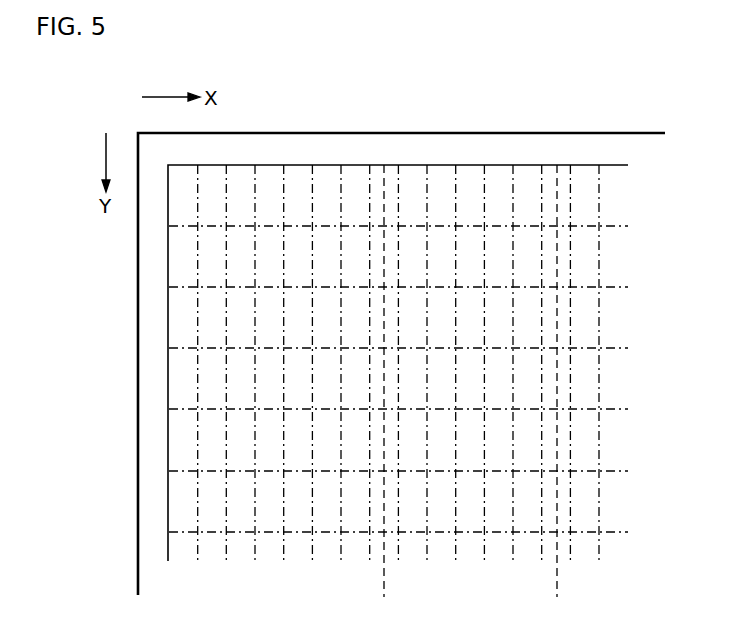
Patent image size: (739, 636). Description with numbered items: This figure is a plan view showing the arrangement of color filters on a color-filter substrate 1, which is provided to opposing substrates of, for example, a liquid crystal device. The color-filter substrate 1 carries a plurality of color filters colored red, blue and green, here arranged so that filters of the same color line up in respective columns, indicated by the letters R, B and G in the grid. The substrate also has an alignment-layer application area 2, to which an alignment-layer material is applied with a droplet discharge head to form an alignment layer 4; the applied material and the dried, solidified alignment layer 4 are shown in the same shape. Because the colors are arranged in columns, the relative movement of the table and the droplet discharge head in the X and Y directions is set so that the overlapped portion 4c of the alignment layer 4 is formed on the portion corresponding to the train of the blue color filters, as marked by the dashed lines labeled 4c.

The color-filter substrate 1 is at (138, 442).
The alignment-layer application area 2 is at (168, 260).
The alignment layer 4 is at (612, 165).
The overlapped portion 4c is at (585, 610).